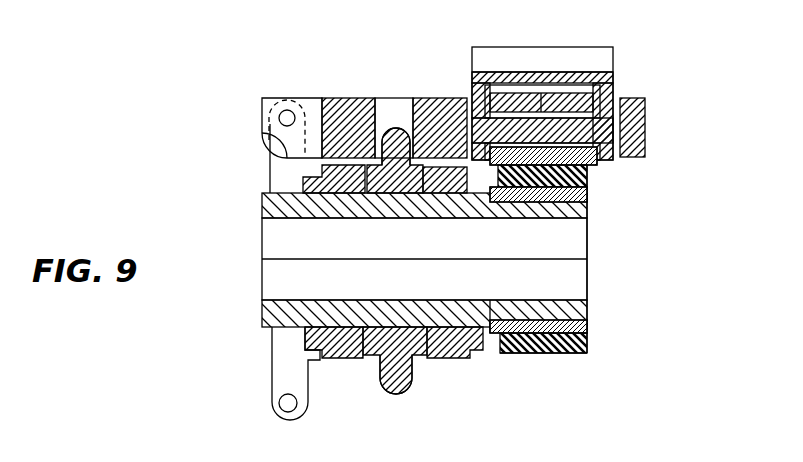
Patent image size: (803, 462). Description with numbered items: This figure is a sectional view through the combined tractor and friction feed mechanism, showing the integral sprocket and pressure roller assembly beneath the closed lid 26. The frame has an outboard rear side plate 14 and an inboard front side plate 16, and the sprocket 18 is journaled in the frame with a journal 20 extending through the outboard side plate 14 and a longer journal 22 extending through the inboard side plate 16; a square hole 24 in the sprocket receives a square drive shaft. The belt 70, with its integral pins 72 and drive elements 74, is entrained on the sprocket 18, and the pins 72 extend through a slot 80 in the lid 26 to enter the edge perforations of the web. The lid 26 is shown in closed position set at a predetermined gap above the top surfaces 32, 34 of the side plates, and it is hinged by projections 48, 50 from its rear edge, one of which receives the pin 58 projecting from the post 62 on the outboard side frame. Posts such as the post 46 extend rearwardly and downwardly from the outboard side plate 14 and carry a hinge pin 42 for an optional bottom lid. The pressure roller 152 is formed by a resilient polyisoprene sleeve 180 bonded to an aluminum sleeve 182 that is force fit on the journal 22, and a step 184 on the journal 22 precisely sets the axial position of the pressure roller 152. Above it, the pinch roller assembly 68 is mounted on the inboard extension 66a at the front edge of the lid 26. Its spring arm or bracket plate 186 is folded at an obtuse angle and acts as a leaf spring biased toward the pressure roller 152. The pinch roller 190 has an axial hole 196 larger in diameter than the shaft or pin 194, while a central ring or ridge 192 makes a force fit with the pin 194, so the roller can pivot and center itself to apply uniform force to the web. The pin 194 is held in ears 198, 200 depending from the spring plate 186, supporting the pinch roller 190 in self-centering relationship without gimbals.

The outboard rear side plate 14 is at (334, 353).
The inboard front side plate 16 is at (466, 355).
The sprocket 18 is at (365, 195).
The journal 20 is at (262, 200).
The journal 22 is at (585, 213).
The square hole 24 is at (583, 297).
The lid 26 is at (352, 97).
The top surface 32 is at (330, 195).
The top surface 34 is at (453, 195).
The hinge pin 42 is at (275, 406).
The post 46 is at (272, 370).
The projection 48 is at (312, 97).
The projection 50 is at (283, 97).
The pin 58 is at (281, 114).
The post 62 is at (273, 125).
The inboard extension 66a is at (640, 97).
The pinch roller assembly 68 is at (641, 57).
The belt 70 is at (432, 360).
The pins 72 is at (396, 130).
The drive elements 74 is at (402, 212).
The slot 80 is at (380, 97).
The pressure roller 152 is at (540, 354).
The sleeve of resilient material 180 is at (590, 341).
The metal sleeve 182 is at (588, 322).
The step 184 is at (490, 320).
The spring arm or bracket plate 186 is at (520, 72).
The pinch roller 190 is at (590, 72).
The central ring or ridge 192 is at (552, 95).
The shaft or pin 194 is at (588, 193).
The axial hole 196 is at (494, 92).
The ear 198 is at (598, 158).
The ear 200 is at (471, 100).